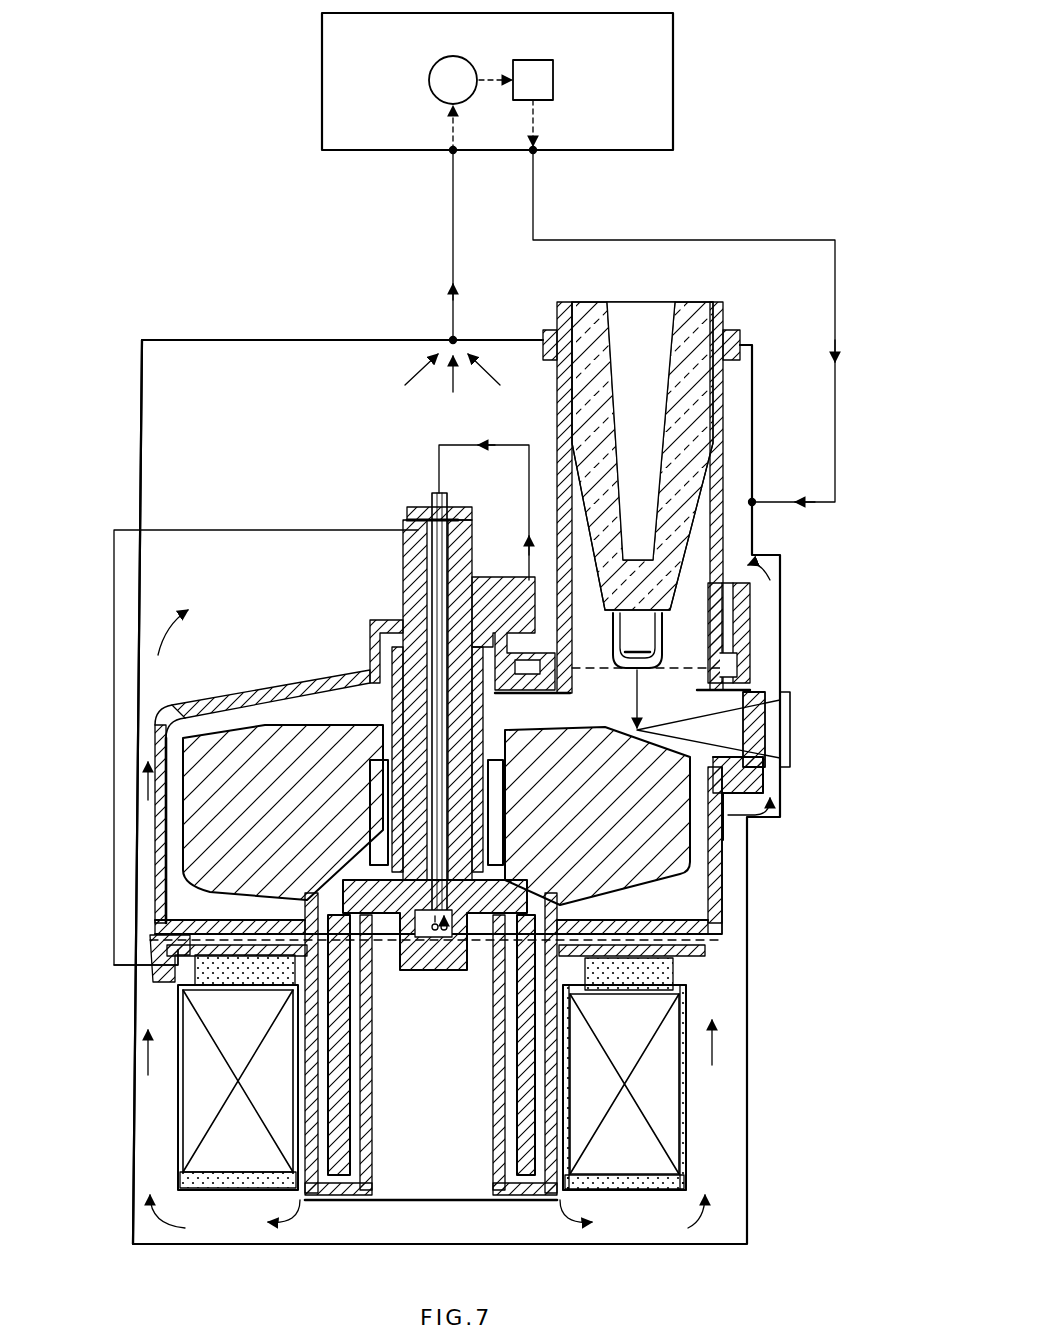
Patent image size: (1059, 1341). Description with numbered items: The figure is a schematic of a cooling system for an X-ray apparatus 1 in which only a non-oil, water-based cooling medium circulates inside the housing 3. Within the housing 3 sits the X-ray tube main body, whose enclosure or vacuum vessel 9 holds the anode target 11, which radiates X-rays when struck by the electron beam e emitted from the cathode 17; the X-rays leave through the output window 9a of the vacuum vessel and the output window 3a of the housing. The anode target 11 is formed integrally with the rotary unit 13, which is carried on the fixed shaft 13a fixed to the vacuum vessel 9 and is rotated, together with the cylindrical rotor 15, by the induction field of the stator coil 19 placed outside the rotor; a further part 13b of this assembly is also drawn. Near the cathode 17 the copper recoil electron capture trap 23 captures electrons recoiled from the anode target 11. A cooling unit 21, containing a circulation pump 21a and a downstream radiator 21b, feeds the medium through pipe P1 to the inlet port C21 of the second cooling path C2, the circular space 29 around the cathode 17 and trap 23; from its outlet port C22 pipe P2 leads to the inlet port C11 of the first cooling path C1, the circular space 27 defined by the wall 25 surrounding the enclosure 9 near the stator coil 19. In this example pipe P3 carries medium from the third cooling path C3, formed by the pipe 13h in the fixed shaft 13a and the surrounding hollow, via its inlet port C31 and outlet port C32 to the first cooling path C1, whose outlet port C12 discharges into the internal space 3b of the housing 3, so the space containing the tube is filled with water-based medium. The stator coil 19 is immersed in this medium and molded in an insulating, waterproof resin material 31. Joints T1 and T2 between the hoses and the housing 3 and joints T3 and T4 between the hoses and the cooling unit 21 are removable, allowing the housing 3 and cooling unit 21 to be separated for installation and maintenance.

The flame detector apparatus 1 is at (196, 213).
The housing 3 is at (272, 340).
The X-ray output window of housing 3a is at (792, 712).
The internal space of housing 3b is at (150, 408).
The enclosure (vacuum vessel) 9 is at (221, 688).
The X-ray output window of vacuum vessel 9a is at (770, 750).
The anode target 11 is at (592, 742).
The rotary unit 13 is at (385, 605).
The fixed shaft 13a is at (402, 714).
The actuator electrode 13b is at (370, 780).
The pipe 13h is at (438, 926).
The rotor 15 is at (335, 1138).
The cathode 17 is at (610, 654).
The stator coil 19 is at (670, 1115).
The cooling unit 21 is at (676, 45).
The circulation pump 21a is at (428, 82).
The heat exchanger (radiator) 21b is at (555, 72).
The recoil electron capture trap 23 is at (680, 692).
The wall 25 is at (186, 945).
The circular space 27 is at (220, 945).
The circular space 29 is at (752, 663).
The resin material 31 is at (618, 1186).
The first cooling path C1 is at (680, 946).
The second cooling path C2 is at (745, 682).
The third cooling path C3 is at (455, 712).
The inlet port of first cooling path C11 is at (114, 965).
The outlet port of first cooling path C12 is at (273, 976).
The inlet port of second cooling path C21 is at (790, 598).
The outlet port of second cooling path C22 is at (511, 584).
The inlet port of third cooling path C31 is at (472, 512).
The outlet port of third cooling path C32 is at (410, 542).
The pipe P1 is at (535, 214).
The pipe P2 is at (438, 460).
The pipe P3 is at (190, 530).
The joint T1 is at (446, 338).
The joint T2 is at (755, 505).
The joint T3 is at (456, 155).
The joint T4 is at (536, 155).
The electron beam e is at (640, 706).